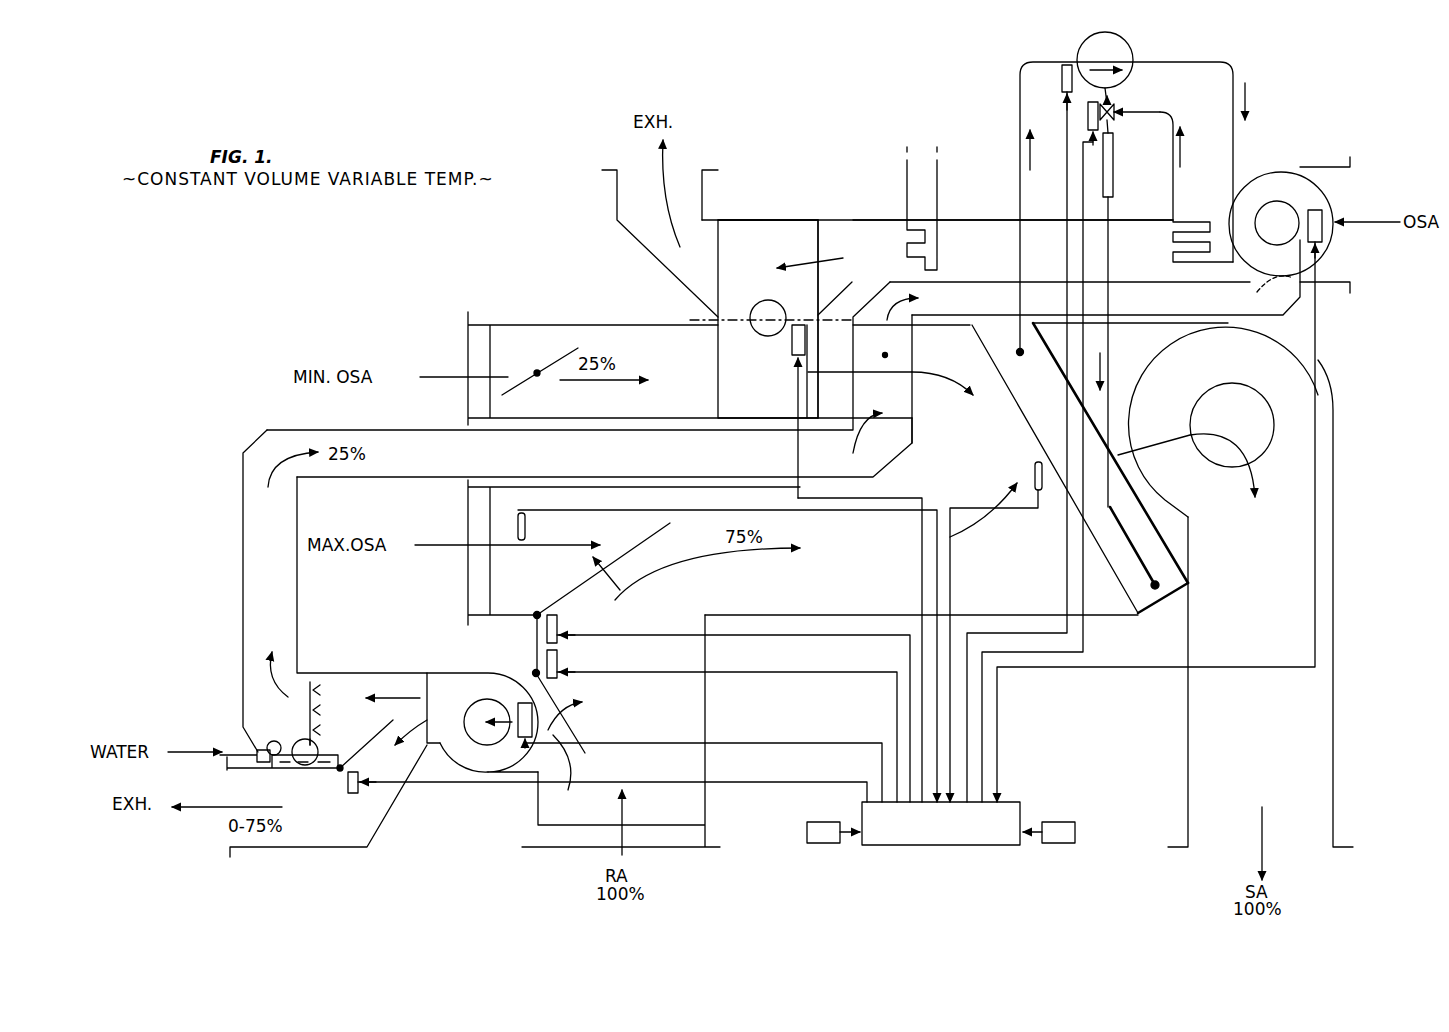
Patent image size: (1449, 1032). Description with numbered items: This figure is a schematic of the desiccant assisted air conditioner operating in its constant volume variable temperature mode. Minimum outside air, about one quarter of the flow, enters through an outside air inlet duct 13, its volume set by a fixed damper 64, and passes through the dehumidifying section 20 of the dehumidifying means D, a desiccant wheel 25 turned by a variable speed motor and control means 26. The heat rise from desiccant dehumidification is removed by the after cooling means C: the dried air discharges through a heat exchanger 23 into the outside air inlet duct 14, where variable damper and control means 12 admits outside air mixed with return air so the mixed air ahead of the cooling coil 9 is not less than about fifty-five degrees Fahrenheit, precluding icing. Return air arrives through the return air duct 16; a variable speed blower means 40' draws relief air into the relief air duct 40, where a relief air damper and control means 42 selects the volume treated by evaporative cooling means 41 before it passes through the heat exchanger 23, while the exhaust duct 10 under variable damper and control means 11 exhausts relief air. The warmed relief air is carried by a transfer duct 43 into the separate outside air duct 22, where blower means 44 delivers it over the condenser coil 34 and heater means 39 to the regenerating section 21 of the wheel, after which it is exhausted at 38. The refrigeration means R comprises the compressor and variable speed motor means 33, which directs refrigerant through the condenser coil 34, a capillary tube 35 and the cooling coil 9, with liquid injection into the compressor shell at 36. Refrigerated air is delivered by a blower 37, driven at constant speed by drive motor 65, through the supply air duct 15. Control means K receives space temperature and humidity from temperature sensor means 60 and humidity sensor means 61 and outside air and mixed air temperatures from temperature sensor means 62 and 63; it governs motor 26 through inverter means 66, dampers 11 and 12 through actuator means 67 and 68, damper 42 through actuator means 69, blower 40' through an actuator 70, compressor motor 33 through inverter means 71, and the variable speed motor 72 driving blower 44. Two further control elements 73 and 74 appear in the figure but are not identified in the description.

The cooling coil 9 is at (1033, 403).
The exhaust duct 10 is at (380, 687).
The variable damper and control means 11 is at (562, 728).
The variable damper and control means 12 is at (660, 536).
The outside air inlet duct 13 is at (690, 368).
The outside air inlet duct 14 is at (634, 578).
The supply air duct 15 is at (1223, 682).
The return air duct 16 is at (621, 731).
The dehumidifying section 20 is at (742, 373).
The regenerating section 21 is at (800, 236).
The outside air duct 22 is at (1013, 241).
The heat exchanger 23 is at (890, 355).
The desiccant wheel 25 is at (826, 242).
The variable speed motor and control means 26 is at (772, 300).
The compressor and variable speed motor means 33 is at (1128, 44).
The condenser coil 34 is at (1193, 222).
The capillary tube 35 is at (1113, 172).
The liquid injection 36 is at (1115, 98).
The blower 37 is at (1323, 374).
The exhaust 38 is at (638, 188).
The heater means 39 is at (924, 228).
The relief air duct 40 is at (577, 517).
The variable speed blower means 40' is at (478, 710).
The evaporative cooling means 41 is at (320, 688).
The relief air damper and control means 42 is at (378, 758).
The transfer duct 43 is at (1095, 277).
The blower means 44 is at (1273, 173).
The temperature sensor means 60 is at (1075, 820).
The humidity sensor means 61 is at (822, 820).
The temperature sensor means 62 is at (527, 527).
The temperature sensor means 63 is at (1033, 470).
The fixed damper 64 is at (538, 370).
The drive motor 65 is at (1257, 389).
The inverter means 66 is at (792, 340).
The actuator means 67 is at (559, 622).
The actuator means 68 is at (559, 659).
The actuator means 69 is at (345, 777).
The actuator 70 is at (533, 712).
The inverter means 71 is at (1060, 78).
The variable speed motor 72 is at (1290, 212).
The sensor 73 is at (1326, 214).
The sensor 74 is at (1088, 113).
The after cooling means C is at (914, 407).
The dehumidifying means D is at (756, 213).
The control means K is at (1017, 798).
The refrigeration means R is at (1212, 84).